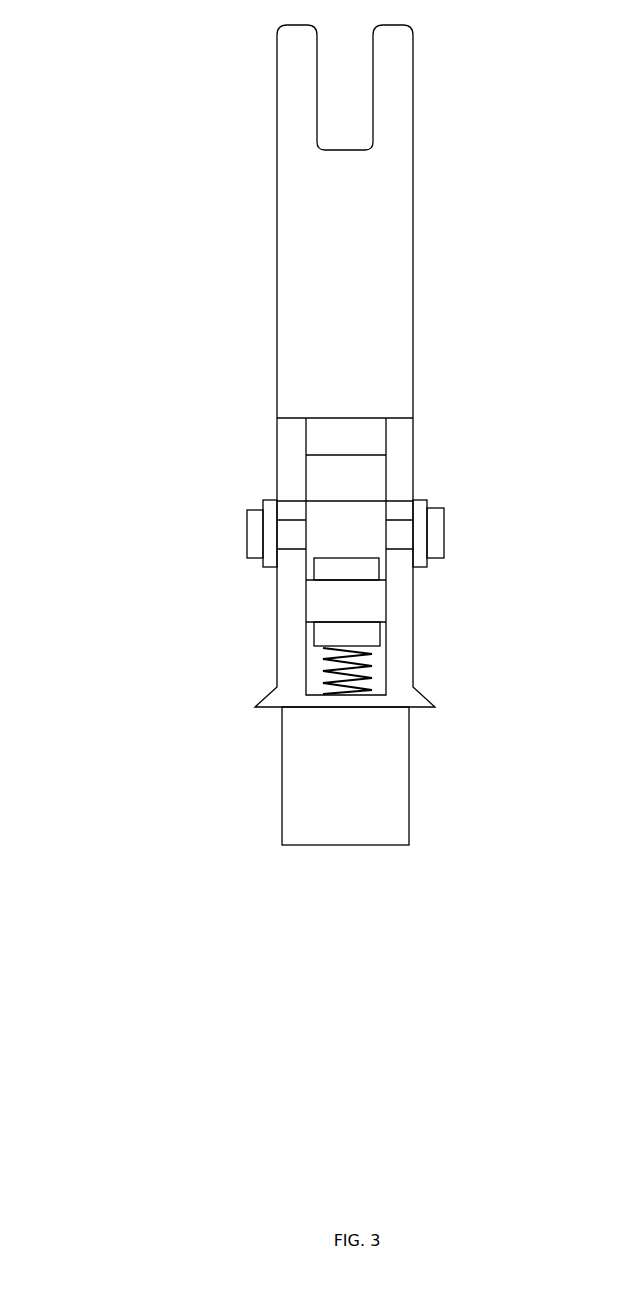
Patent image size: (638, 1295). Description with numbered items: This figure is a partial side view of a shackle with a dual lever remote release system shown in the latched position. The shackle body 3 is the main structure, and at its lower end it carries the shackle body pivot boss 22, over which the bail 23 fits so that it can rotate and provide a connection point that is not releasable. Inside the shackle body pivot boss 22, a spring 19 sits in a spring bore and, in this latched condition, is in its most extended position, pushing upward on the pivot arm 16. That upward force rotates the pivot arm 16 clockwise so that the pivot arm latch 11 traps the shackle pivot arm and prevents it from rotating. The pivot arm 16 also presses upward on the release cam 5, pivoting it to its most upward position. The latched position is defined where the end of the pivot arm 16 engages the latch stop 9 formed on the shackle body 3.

The shackle body 3 is at (375, 223).
The release cam 5 is at (418, 498).
The bail 23 is at (440, 520).
The pivot arm latch 11 is at (363, 570).
The latch stop 9 is at (373, 602).
The pivot arm 16 is at (378, 632).
The spring 19 is at (370, 682).
The shackle body pivot boss 22 is at (367, 807).